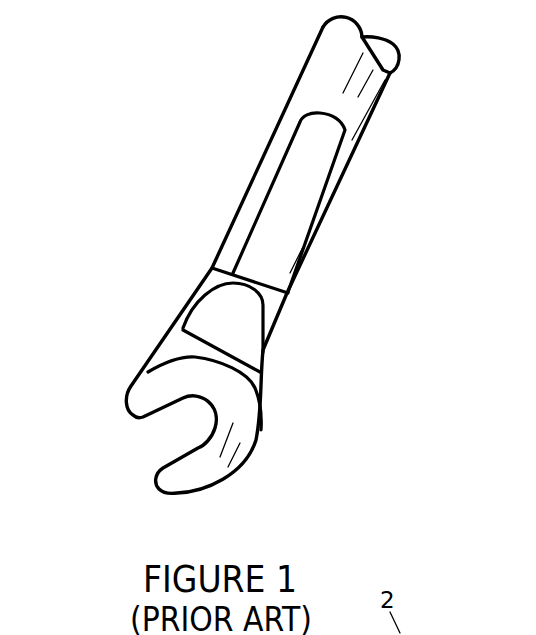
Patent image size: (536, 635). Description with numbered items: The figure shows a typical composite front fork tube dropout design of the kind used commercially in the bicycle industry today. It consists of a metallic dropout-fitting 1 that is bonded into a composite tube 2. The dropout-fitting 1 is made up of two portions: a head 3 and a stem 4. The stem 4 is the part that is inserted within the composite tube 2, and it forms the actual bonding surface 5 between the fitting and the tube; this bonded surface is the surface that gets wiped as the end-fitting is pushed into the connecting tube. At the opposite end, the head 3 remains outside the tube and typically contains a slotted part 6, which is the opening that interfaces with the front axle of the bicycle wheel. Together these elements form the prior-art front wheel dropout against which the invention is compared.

The dropout-fitting 1 is at (150, 402).
The composite tube 2 is at (305, 65).
The head 3 is at (255, 330).
The stem 4 is at (302, 192).
The bonding surface 5 is at (252, 196).
The slotted part 6 is at (196, 454).